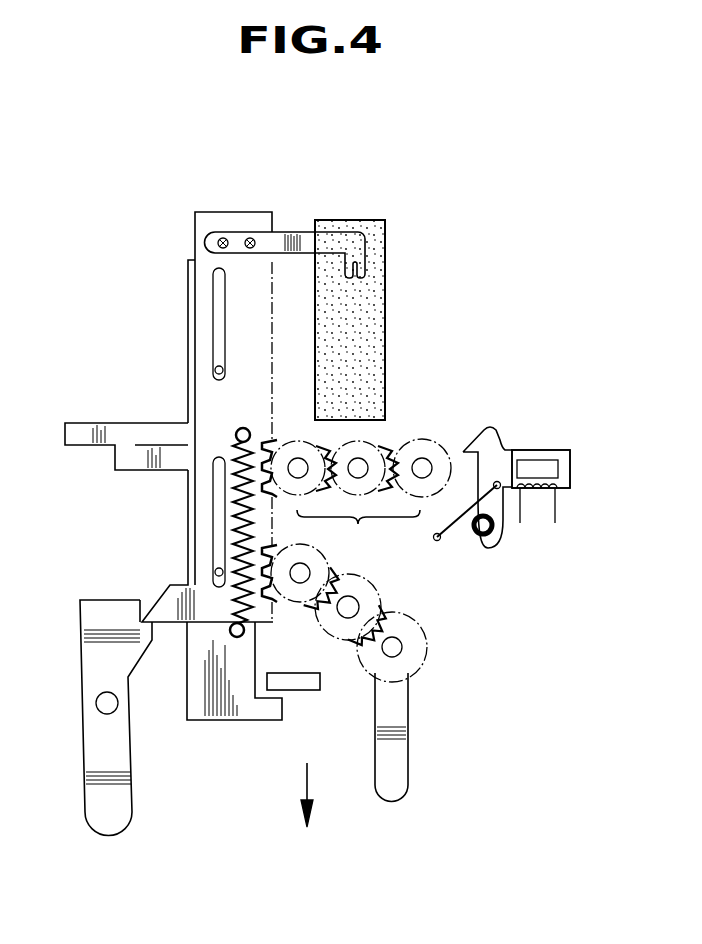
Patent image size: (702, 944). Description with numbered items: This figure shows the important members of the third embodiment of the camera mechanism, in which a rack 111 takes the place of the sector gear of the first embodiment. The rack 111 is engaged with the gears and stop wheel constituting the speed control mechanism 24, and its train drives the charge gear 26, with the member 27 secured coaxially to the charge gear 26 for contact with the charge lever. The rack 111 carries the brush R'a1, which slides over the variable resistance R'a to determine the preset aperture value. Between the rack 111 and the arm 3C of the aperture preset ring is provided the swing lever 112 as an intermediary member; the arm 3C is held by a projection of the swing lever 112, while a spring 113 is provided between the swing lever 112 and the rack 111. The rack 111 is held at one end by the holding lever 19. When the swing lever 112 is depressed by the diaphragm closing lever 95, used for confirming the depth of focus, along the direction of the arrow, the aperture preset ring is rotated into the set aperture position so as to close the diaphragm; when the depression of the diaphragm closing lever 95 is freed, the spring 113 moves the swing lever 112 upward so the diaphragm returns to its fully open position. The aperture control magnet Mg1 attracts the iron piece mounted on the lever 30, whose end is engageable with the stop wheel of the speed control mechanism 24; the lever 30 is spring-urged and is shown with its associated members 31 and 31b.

The swing lever 112 is at (228, 722).
The arm of the aperture preset ring 3C is at (108, 432).
The brush R'a1 is at (285, 226).
The variable resistance R'a is at (373, 320).
The spring 113 is at (243, 540).
The rack 111 is at (258, 613).
The speed control mechanism 24 is at (361, 495).
The charge gear 26 is at (413, 630).
The lever secured to the charge gear 27 is at (408, 728).
The diaphragm closing lever 95 is at (315, 686).
The holding lever 19 is at (123, 792).
The lever 30 is at (493, 432).
The magnet core 31 is at (515, 452).
The aperture control magnet Mg1 is at (570, 468).
The link 31b is at (448, 538).